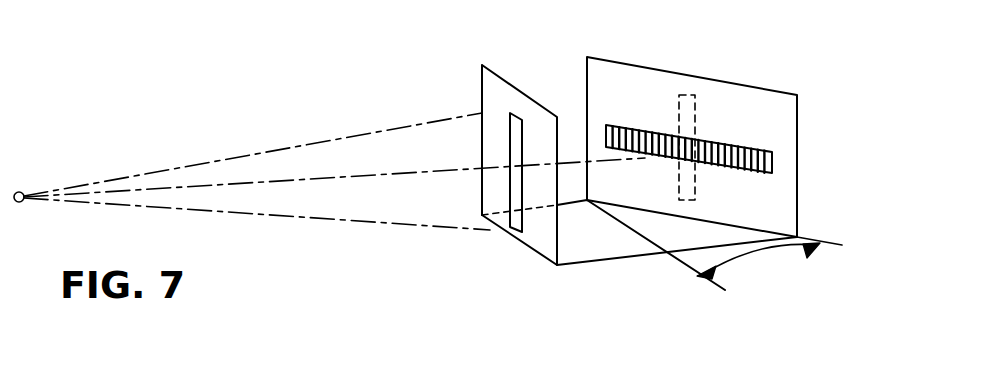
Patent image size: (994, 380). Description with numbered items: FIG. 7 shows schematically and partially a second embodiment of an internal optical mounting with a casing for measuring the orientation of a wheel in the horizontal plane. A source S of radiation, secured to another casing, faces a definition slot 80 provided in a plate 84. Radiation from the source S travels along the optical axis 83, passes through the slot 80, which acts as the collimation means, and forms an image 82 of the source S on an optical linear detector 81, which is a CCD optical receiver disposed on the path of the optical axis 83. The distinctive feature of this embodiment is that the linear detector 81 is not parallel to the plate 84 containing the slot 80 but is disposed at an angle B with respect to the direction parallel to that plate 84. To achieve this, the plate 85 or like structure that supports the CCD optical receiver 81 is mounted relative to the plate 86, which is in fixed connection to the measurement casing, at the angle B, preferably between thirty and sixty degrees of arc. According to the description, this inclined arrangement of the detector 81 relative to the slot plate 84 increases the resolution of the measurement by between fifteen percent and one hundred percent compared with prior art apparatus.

The source of radiation S is at (19, 192).
The definition slot 80 is at (508, 113).
The optical linear detector 81 is at (770, 172).
The image of the source 82 is at (678, 112).
The optical axis 83 is at (250, 178).
The plate 84 is at (495, 93).
The plate for support of the CCD optical receiver 85 is at (752, 115).
The plate in fixed connection to the measurement casing 86 is at (580, 243).
The angle B is at (703, 253).